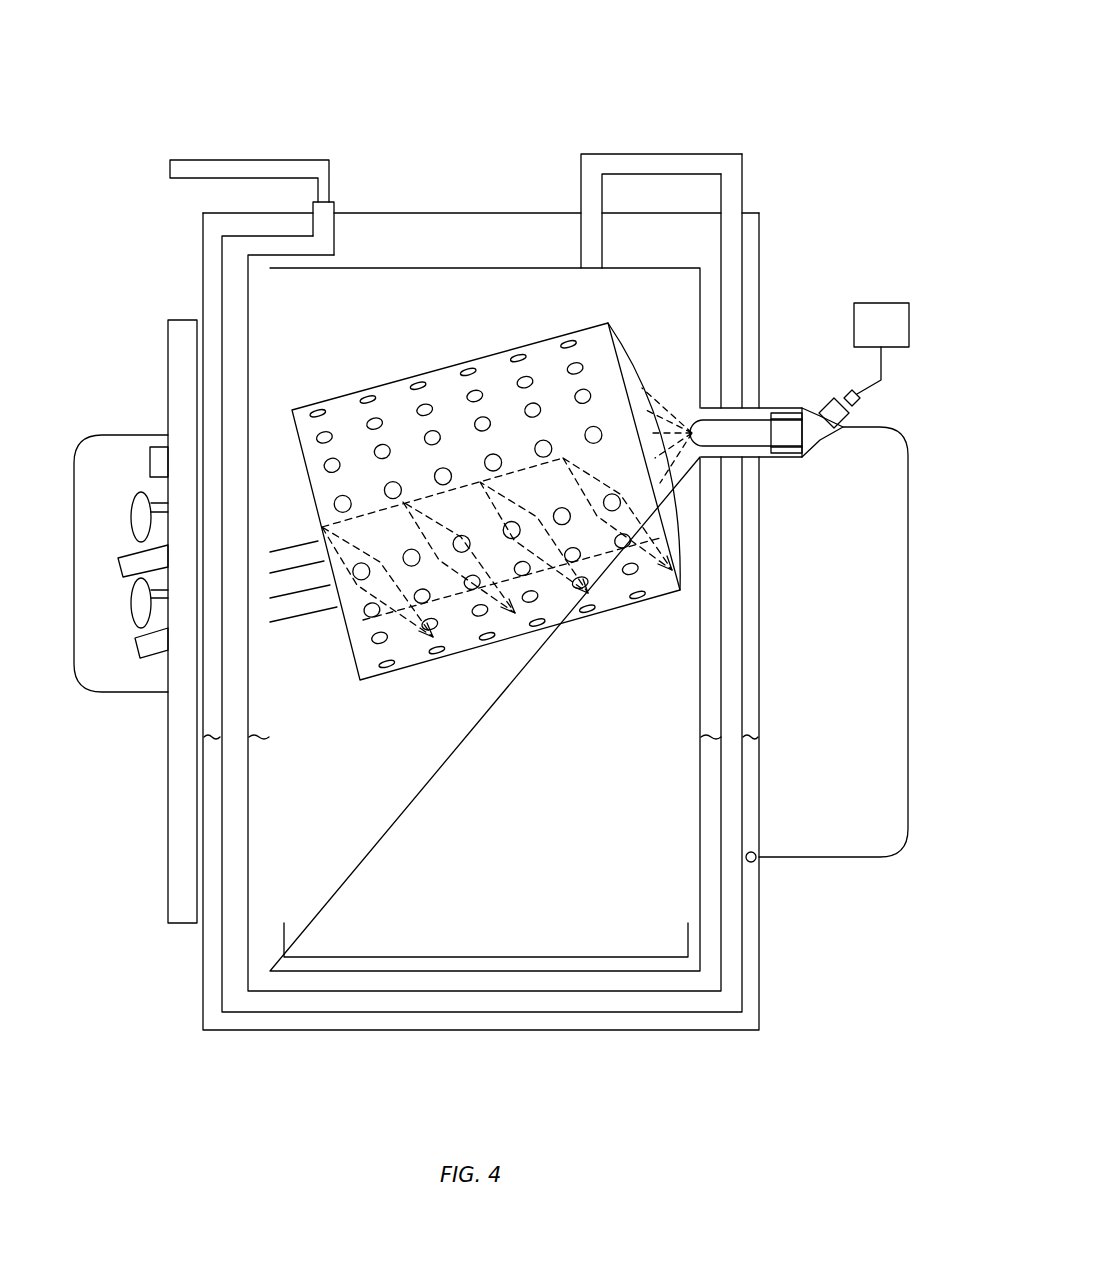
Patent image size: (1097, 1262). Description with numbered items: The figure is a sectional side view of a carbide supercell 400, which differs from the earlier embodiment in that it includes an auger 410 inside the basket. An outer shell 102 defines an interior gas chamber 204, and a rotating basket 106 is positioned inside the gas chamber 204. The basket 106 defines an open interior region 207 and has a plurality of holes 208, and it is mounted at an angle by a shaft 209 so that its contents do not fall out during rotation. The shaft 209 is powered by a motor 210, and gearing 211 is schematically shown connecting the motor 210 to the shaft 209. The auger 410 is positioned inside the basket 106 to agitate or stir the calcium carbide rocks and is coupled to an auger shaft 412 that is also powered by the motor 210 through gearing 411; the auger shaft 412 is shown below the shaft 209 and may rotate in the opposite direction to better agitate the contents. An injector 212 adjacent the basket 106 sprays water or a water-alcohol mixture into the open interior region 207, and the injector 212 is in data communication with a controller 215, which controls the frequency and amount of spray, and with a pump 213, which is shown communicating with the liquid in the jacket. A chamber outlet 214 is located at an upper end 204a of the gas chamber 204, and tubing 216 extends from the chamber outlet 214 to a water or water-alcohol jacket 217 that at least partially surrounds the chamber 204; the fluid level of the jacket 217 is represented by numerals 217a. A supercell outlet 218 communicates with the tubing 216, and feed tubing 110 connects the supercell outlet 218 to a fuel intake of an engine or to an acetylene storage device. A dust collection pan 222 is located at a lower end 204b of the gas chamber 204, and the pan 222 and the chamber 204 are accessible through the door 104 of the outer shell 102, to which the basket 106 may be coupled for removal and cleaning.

The carbide supercell 400 is at (768, 56).
The outer shell 102 is at (203, 262).
The door 104 is at (168, 828).
The rotating basket 106 is at (447, 382).
The feed tubing 110 is at (198, 160).
The interior gas chamber 204 is at (493, 754).
The upper end of the interior gas chamber 204a is at (350, 314).
The lower end of the interior gas chamber 204b is at (360, 899).
The open interior region 207 is at (637, 390).
The holes 208 is at (570, 363).
The shaft 209 is at (288, 560).
The motor 210 is at (163, 461).
The gearing 211 is at (137, 520).
The injector 212 is at (851, 416).
The pump 213 is at (760, 852).
The chamber outlet 214 is at (592, 257).
The controller 215 is at (881, 325).
The tubing 216 is at (683, 162).
The water or water-alcohol jacket 217 is at (215, 945).
The fluid level 217a is at (212, 738).
The supercell outlet 218 is at (327, 212).
The dust collection pan 222 is at (381, 958).
The auger 410 is at (662, 512).
The gearing 411 is at (141, 603).
The auger shaft 412 is at (147, 647).